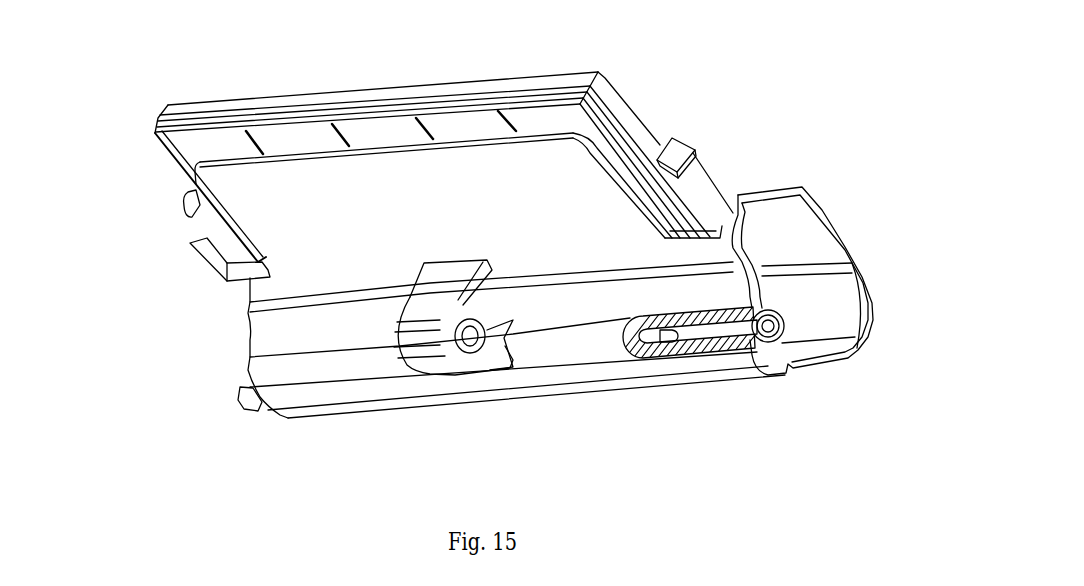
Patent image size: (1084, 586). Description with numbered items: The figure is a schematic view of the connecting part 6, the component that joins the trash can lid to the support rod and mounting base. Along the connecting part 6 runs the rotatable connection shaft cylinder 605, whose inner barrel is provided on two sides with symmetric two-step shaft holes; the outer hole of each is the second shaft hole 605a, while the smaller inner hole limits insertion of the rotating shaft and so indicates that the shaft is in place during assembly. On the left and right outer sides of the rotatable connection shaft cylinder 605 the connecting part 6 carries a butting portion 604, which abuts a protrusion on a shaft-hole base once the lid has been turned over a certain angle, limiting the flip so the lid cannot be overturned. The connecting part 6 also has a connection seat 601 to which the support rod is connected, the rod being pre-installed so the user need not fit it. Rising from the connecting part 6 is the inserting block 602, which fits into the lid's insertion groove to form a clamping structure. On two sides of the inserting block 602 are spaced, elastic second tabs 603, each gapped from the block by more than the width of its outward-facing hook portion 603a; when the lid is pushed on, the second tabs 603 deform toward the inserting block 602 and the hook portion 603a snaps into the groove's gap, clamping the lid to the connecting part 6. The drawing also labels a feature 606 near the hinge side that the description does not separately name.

The connecting part 6 is at (502, 259).
The connection seat 601 is at (432, 341).
The inserting block 602 is at (460, 133).
The second tab 603 is at (195, 215).
The hook portion 603a is at (697, 148).
The butting portion 604 is at (808, 262).
The rotatable connection shaft cylinder 605 is at (580, 353).
The second shaft hole 605a is at (748, 333).
The hinge bracket 606 is at (235, 292).